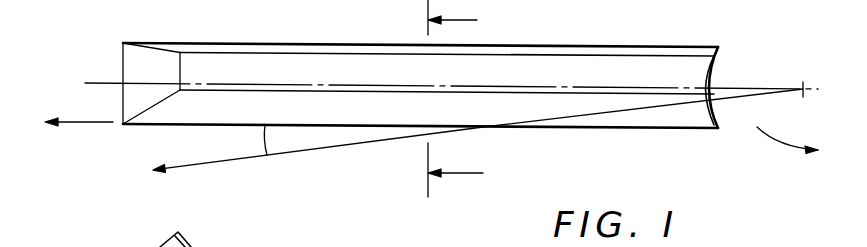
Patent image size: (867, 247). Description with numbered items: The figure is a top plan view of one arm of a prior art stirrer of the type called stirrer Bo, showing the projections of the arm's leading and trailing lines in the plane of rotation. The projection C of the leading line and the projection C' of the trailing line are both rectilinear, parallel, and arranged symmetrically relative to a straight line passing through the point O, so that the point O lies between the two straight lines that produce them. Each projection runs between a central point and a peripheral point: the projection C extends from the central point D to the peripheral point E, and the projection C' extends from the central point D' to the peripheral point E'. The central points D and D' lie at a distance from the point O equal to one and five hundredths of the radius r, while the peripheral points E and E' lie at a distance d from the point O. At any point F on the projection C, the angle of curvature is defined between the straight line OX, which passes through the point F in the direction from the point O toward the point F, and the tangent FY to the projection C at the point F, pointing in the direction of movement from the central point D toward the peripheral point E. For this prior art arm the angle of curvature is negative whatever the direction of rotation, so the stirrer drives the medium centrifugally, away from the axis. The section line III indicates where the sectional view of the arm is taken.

The projection of the trailing line C' is at (420, 51).
The projection of the leading line C is at (420, 109).
The peripheral point of projection (C') E' is at (123, 46).
The peripheral point of projection (C) E is at (127, 119).
The central point of projection (C') D' is at (714, 51).
The central point of projection (C) D is at (712, 125).
The point O is at (451, 103).
The point F is at (643, 121).
The straight line OX X is at (308, 155).
The tangent FY Y is at (79, 108).
The section line III- III is at (483, 12).